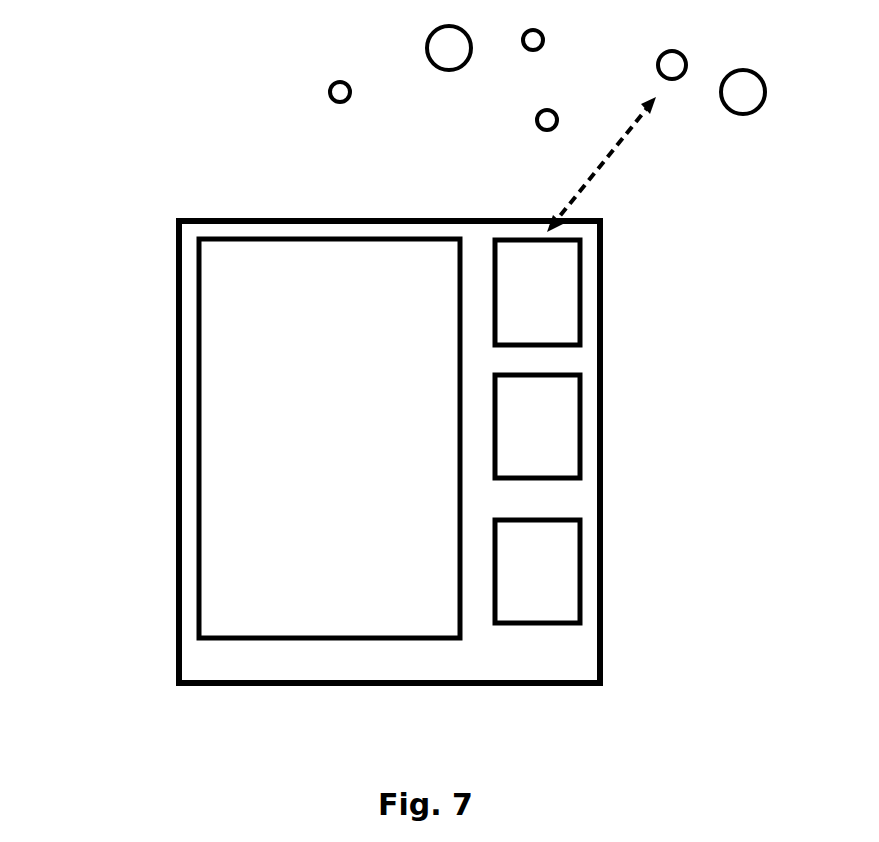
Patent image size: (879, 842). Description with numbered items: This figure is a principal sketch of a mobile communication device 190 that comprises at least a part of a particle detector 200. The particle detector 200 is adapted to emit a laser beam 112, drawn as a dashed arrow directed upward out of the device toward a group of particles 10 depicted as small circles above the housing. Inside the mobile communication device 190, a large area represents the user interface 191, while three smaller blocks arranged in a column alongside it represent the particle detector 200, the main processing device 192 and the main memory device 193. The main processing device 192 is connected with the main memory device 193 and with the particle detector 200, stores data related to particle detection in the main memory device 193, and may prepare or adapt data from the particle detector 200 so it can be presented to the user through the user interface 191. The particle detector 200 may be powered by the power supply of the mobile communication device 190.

The particles / objects 10 is at (352, 91).
The laser beam 112 is at (610, 158).
The mobile communication device 190 is at (200, 217).
The user interface 191 is at (195, 493).
The main processing device 192 is at (583, 438).
The main memory device 193 is at (583, 567).
The particle detector 200 is at (583, 270).